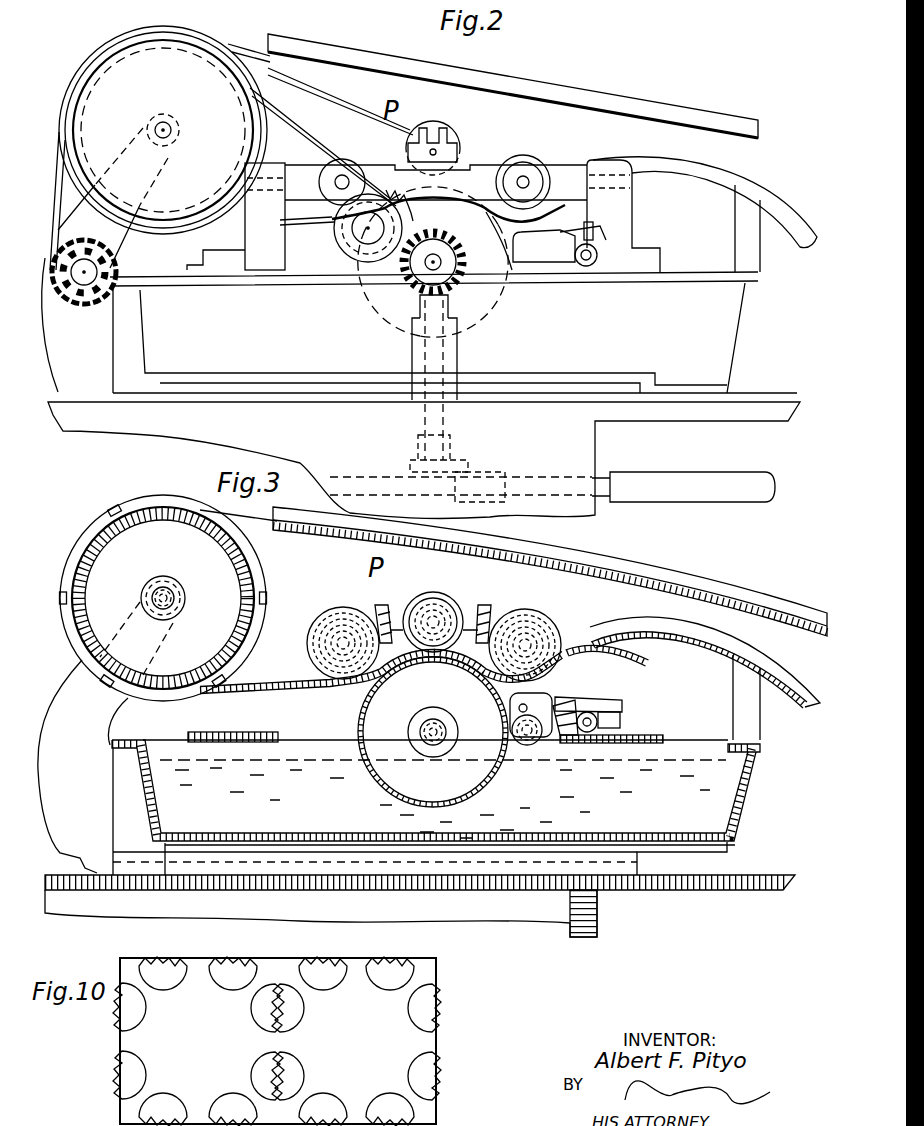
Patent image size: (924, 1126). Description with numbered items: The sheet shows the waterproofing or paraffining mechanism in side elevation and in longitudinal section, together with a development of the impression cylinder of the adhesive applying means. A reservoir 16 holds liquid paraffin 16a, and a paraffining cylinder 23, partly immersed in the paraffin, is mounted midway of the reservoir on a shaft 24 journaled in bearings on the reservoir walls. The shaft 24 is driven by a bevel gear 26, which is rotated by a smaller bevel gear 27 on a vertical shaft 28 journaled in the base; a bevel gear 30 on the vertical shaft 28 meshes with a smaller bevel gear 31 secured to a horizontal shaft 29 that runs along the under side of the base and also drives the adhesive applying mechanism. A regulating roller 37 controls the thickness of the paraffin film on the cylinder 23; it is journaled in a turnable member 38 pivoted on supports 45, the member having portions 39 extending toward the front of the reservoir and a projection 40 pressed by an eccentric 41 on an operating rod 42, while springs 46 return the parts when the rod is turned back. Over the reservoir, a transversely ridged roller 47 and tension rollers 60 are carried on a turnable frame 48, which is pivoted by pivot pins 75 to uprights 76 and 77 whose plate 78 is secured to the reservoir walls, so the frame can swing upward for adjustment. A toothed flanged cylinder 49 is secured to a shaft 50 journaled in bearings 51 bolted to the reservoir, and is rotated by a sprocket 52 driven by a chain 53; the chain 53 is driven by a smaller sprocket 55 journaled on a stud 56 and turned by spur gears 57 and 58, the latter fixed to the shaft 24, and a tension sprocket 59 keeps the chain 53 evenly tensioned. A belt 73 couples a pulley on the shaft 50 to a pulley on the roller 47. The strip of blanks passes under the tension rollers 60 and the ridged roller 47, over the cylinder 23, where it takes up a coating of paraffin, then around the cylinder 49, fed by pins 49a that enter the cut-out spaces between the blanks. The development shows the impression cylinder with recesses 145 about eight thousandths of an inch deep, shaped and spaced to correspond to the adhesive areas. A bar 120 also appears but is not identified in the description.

In FIG. 2, the guide bar 120 is at (326, 54).
In FIG. 3, the guide bar 120 is at (338, 537).
In FIG. 2, the belt 73 is at (342, 100).
In FIG. 2, the chain 53 is at (338, 121).
In FIG. 2, the transversely annularly ridged roller 47 is at (448, 132).
In FIG. 3, the transversely annularly ridged roller 47 is at (443, 597).
In FIG. 2, the tension rollers 60 is at (348, 158).
In FIG. 3, the tension rollers 60 is at (340, 612).
In FIG. 2, the turnable frame 48 is at (562, 167).
In FIG. 2, the pivot pins 75 is at (265, 187).
In FIG. 2, the upright 77 is at (625, 212).
In FIG. 2, the sprocket 52 is at (163, 130).
In FIG. 2, the bearings 51 is at (130, 143).
In FIG. 3, the bearings 51 is at (67, 700).
In FIG. 2, the shaft 50 is at (173, 127).
In FIG. 3, the shaft 50 is at (174, 592).
In FIG. 2, the toothed flanged cylinder 49 is at (62, 127).
In FIG. 3, the toothed flanged cylinder 49 is at (80, 607).
In FIG. 3, the pins 49a is at (115, 508).
In FIG. 2, the tension sprocket 59 is at (78, 292).
In FIG. 2, the stud 56 is at (352, 233).
In FIG. 2, the spur gear 57 is at (410, 222).
In FIG. 2, the spur gear 58 is at (457, 242).
In FIG. 2, the shaft 24 is at (443, 260).
In FIG. 3, the shaft 24 is at (436, 718).
In FIG. 2, the upright 76 is at (229, 253).
In FIG. 2, the smaller sprocket 55 is at (363, 282).
In FIG. 2, the plate 78 is at (247, 278).
In FIG. 2, the waterproofing or paraffining cylinder 23 is at (370, 307).
In FIG. 3, the waterproofing or paraffining cylinder 23 is at (433, 732).
In FIG. 2, the smaller bevel gear 27 is at (412, 296).
In FIG. 2, the bevel gear 26 is at (478, 298).
In FIG. 2, the supports 45 is at (530, 268).
In FIG. 2, the turnable member 38 is at (560, 265).
In FIG. 3, the turnable member 38 is at (512, 732).
In FIG. 2, the reservoir 16 is at (729, 330).
In FIG. 3, the reservoir 16 is at (740, 783).
In FIG. 3, the liquid paraffin 16a is at (443, 799).
In FIG. 2, the vertical shaft 28 is at (427, 417).
In FIG. 2, the bevel gear 30 is at (400, 463).
In FIG. 2, the smaller bevel gear 31 is at (477, 472).
In FIG. 2, the horizontal shaft 29 is at (603, 505).
In FIG. 3, the projection 40 is at (510, 698).
In FIG. 3, the regulating roller 37 is at (560, 737).
In FIG. 3, the operating rod 42 is at (587, 733).
In FIG. 3, the eccentric 41 is at (613, 743).
In FIG. 3, the portions 39 is at (608, 698).
In FIG. 3, the springs 46 is at (622, 712).
In FIG. 10, the recesses 145 is at (417, 1055).